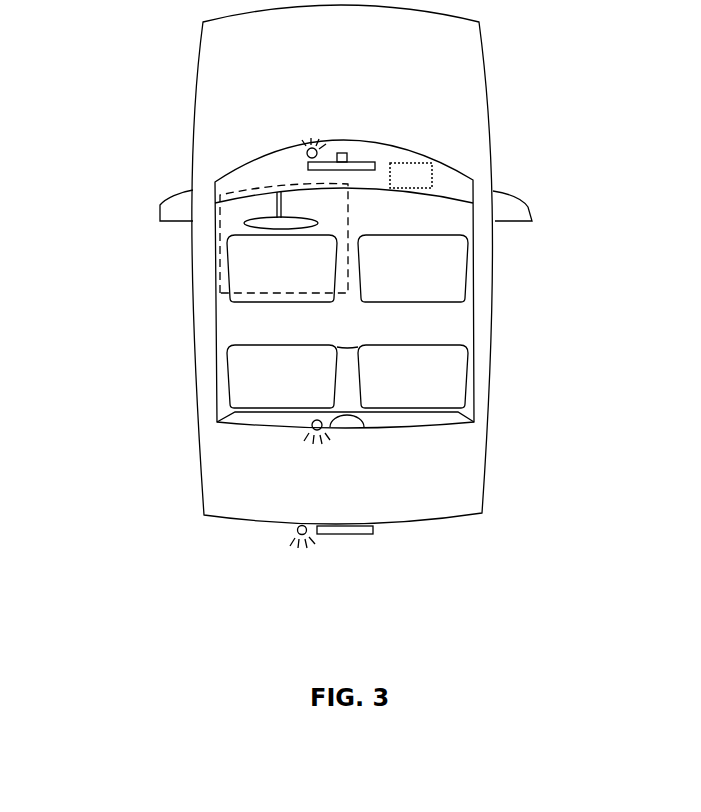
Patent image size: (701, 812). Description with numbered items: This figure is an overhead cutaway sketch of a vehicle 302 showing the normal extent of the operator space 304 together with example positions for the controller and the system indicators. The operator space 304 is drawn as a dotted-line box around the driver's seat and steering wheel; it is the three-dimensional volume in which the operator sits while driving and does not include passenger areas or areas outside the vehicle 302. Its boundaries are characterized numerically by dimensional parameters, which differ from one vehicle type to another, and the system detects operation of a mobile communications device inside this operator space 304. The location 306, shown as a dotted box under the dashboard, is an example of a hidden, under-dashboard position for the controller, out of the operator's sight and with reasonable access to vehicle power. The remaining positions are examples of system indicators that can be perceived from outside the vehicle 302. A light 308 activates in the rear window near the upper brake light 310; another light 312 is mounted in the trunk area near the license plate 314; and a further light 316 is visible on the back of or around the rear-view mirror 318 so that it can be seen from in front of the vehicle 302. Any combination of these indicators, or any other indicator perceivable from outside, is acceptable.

The vehicle 302 is at (187, 88).
The operator space 304 is at (205, 277).
The location 306 is at (418, 171).
The light 308 is at (291, 424).
The upper brake light 310 is at (378, 422).
The light 312 is at (278, 536).
The license plate 314 is at (336, 545).
The light 316 is at (294, 148).
The rear-view mirror 318 is at (370, 151).